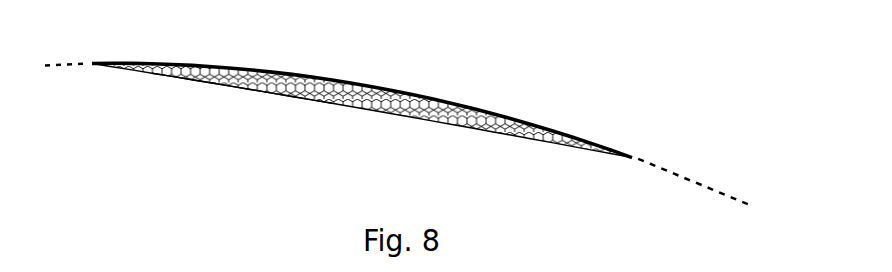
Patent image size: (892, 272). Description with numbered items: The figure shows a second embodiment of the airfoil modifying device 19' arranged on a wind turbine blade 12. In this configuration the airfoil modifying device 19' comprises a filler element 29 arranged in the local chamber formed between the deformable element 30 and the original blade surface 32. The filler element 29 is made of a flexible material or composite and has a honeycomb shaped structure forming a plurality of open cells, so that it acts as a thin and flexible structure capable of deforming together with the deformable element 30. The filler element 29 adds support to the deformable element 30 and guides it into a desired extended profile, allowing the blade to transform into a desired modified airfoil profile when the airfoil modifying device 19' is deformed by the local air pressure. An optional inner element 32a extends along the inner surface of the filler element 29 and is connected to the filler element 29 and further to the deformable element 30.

The blade / panel 12 is at (521, 117).
The airfoil modifying device 19' is at (241, 128).
The filler element 29 is at (452, 125).
The deformable element 30 is at (355, 108).
The original blade surface 32 is at (438, 94).
The inner element 32a is at (362, 110).